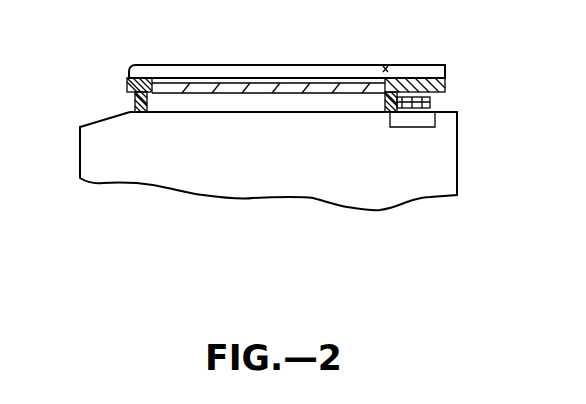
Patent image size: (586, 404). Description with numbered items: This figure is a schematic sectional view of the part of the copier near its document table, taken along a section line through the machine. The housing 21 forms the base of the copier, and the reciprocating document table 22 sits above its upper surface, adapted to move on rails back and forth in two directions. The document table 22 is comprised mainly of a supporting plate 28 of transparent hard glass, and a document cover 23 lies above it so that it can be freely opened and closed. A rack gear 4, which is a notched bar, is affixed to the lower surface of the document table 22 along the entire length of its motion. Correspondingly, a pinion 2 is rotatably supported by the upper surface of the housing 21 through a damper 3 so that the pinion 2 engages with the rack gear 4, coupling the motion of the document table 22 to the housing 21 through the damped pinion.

The pinion 2 is at (430, 103).
The damper 3 is at (390, 128).
The rack gear 4 is at (387, 98).
The housing 21 is at (458, 147).
The document table 22 is at (128, 82).
The document cover 23 is at (167, 64).
The supporting plate 28 is at (207, 94).